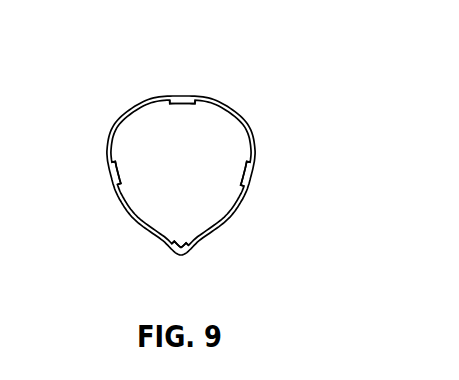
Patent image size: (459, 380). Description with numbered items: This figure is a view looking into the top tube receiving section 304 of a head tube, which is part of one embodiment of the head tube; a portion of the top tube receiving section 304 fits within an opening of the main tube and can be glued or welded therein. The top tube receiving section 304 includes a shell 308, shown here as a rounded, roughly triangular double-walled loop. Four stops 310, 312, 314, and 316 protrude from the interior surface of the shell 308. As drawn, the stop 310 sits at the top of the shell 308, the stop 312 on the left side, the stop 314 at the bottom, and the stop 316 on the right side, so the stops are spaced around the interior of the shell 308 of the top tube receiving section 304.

The top tube receiving section 304 is at (231, 112).
The shell 308 is at (128, 112).
The stop 310 is at (183, 97).
The stop 312 is at (115, 175).
The stop 314 is at (182, 255).
The stop 316 is at (249, 175).